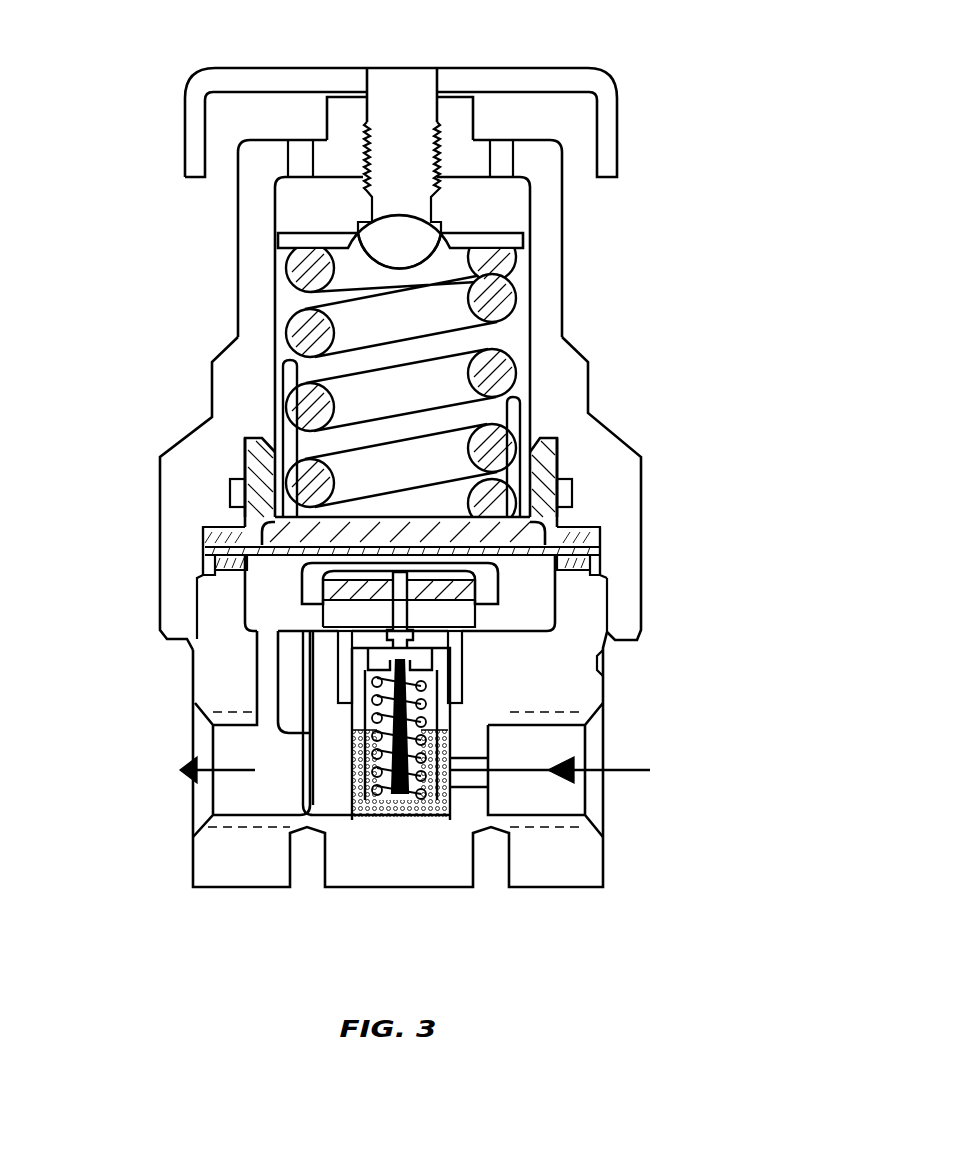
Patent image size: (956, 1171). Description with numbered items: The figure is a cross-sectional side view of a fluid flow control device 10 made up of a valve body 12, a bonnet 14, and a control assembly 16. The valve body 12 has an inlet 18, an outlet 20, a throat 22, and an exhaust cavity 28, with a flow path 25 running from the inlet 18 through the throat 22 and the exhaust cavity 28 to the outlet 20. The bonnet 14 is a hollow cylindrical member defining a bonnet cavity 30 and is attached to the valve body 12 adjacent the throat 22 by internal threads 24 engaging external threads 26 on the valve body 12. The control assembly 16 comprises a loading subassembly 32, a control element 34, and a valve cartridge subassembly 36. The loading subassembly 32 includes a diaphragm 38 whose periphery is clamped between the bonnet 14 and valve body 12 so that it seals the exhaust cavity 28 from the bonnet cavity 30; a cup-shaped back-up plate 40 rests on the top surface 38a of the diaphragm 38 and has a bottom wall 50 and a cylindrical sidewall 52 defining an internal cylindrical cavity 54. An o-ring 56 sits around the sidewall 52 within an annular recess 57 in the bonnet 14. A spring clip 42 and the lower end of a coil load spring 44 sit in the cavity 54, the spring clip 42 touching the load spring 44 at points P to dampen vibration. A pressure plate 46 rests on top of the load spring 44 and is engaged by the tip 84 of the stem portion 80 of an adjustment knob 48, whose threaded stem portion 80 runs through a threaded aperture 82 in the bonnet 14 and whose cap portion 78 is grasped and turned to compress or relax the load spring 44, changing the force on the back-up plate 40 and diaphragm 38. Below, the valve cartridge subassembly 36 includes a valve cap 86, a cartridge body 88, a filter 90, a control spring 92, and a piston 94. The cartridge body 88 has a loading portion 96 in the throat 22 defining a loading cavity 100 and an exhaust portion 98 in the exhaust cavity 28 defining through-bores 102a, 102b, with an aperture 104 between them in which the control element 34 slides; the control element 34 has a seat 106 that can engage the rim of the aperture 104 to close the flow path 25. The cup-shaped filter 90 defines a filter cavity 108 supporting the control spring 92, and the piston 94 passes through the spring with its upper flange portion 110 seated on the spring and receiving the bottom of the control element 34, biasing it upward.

The fluid flow control device 10 is at (660, 157).
The valve body 12 is at (594, 686).
The bonnet 14 is at (548, 279).
The control assembly 16 is at (600, 590).
The inlet 18 is at (580, 800).
The outlet 20 is at (230, 798).
The throat 22 is at (395, 680).
The internal threads 24 is at (335, 640).
The flow path 25 is at (632, 772).
The external threads 26 is at (305, 600).
The exhaust cavity 28 is at (265, 583).
The bonnet cavity 30 is at (290, 302).
The loading subassembly 32 is at (495, 203).
The control element 34 is at (475, 611).
The valve cartridge subassembly 36 is at (357, 700).
The diaphragm 38 is at (602, 551).
The top surface 38a is at (240, 540).
The back-up plate 40 is at (540, 510).
The spring clip 42 is at (525, 398).
The load spring 44 is at (497, 358).
The pressure plate 46 is at (515, 240).
The adjustment knob 48 is at (416, 92).
The bottom wall 50 is at (503, 581).
The cylindrical sidewall 52 is at (255, 448).
The internal cylindrical cavity 54 is at (560, 470).
The o-ring 56 is at (243, 500).
The annular recess 57 is at (562, 467).
The cap portion 78 is at (200, 97).
The stem portion 80 is at (390, 172).
The threaded aperture 82 is at (366, 158).
The tip 84 is at (360, 214).
The valve cap 86 is at (362, 655).
The cartridge body 88 is at (300, 785).
The filter 90 is at (436, 800).
The control spring 92 is at (383, 705).
The piston 94 is at (403, 720).
The loading portion 96 is at (452, 692).
The exhaust portion 98 is at (330, 620).
The loading cavity 100 is at (458, 738).
The through-bore 102a is at (345, 670).
The through-bore 102b is at (462, 602).
The aperture 104 is at (430, 632).
The seat 106 is at (300, 770).
The filter cavity 108 is at (455, 735).
The upper flange portion 110 is at (600, 662).
The points of contact P is at (290, 412).